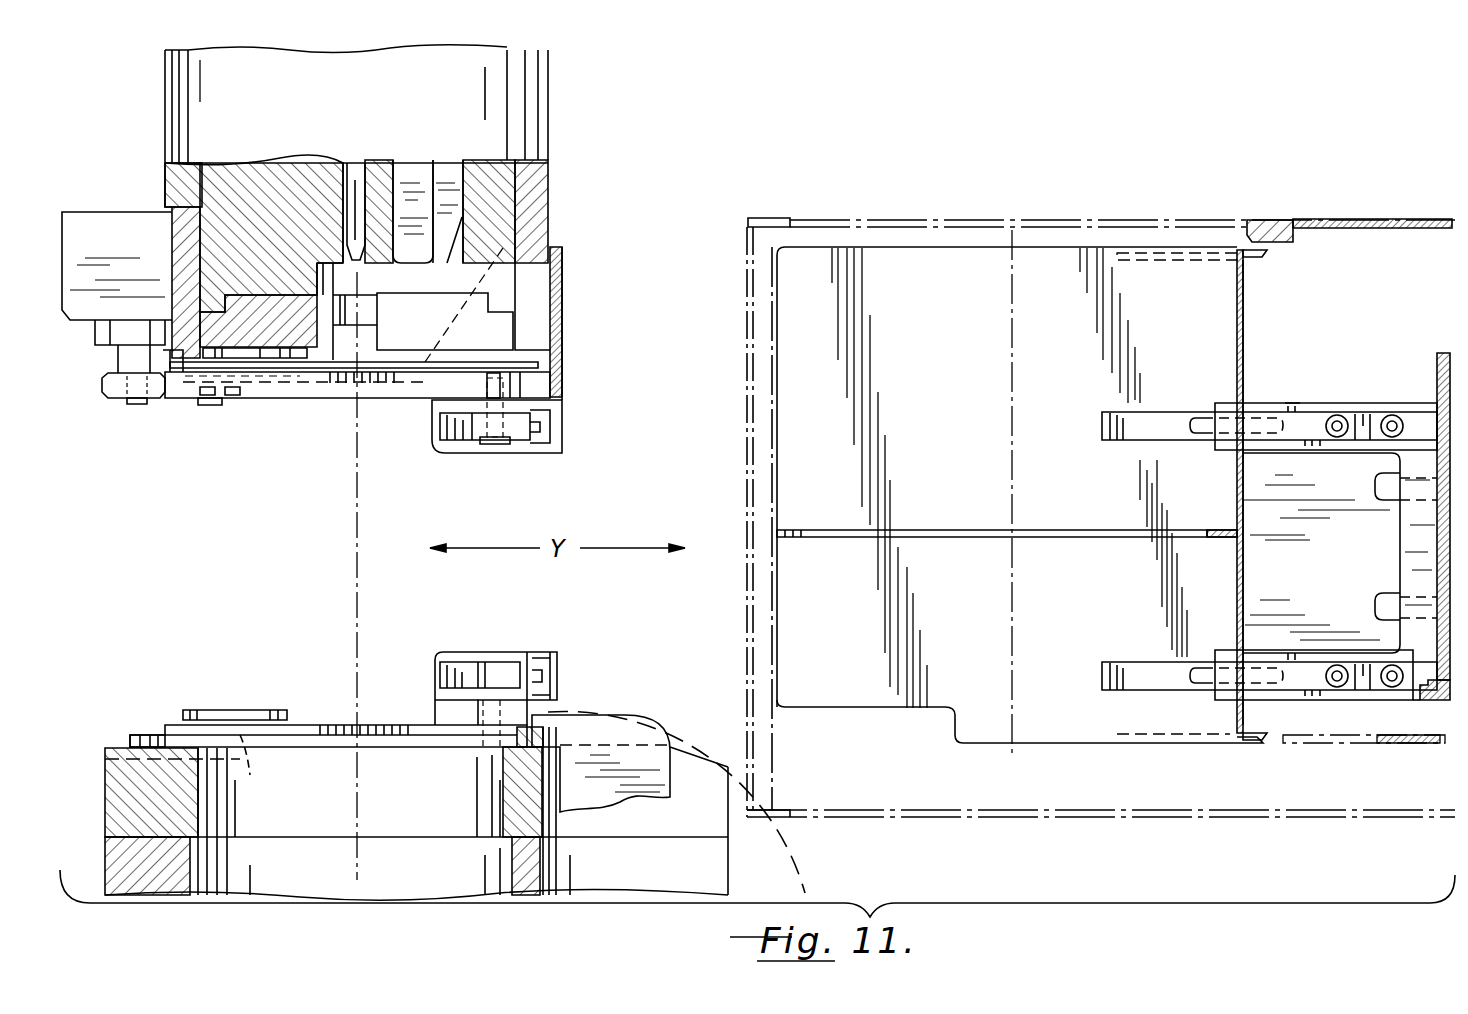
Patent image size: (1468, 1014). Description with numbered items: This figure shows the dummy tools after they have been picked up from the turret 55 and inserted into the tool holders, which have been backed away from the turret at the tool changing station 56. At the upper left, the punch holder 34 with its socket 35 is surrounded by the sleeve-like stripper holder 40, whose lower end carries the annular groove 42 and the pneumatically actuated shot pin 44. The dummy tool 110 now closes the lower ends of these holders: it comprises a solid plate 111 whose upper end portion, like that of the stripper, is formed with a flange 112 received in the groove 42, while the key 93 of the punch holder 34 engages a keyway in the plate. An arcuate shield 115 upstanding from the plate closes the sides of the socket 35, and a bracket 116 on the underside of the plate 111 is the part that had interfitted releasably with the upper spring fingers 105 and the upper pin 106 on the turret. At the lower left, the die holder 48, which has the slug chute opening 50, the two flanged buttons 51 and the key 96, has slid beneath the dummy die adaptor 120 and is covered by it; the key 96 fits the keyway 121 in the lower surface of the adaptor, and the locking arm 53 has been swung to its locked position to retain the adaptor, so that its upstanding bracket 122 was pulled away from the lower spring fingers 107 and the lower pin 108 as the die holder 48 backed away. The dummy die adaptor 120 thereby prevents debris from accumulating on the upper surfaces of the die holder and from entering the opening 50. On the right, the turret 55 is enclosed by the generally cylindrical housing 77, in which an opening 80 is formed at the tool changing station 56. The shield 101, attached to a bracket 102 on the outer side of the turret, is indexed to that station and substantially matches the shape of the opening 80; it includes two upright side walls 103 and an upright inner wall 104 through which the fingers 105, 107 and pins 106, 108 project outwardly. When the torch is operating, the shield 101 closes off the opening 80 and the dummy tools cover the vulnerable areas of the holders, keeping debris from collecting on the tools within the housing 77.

The punch holder 34 is at (210, 194).
The socket 35 is at (554, 272).
The stripper holder 40 is at (550, 190).
The annular groove 42 is at (188, 352).
The shot pin 44 is at (123, 362).
The die holder 48 is at (104, 773).
The opening 50 is at (200, 807).
The flanged buttons 51 is at (239, 710).
The locking arm 53 is at (612, 723).
The turret 55 is at (1436, 383).
The tool changing station 56 is at (768, 492).
The housing 77 is at (1352, 223).
The opening 80 is at (1230, 220).
The key 93 is at (268, 332).
The key 96 is at (148, 743).
The shield 101 is at (1237, 310).
The bracket 102 is at (1400, 548).
The side walls 103 is at (1246, 350).
The inner wall 104 is at (885, 705).
The upper spring fingers 105 is at (1120, 442).
The upper pin 106 is at (1202, 418).
The lower spring fingers 107 is at (1120, 693).
The lower pin 108 is at (1201, 668).
The dummy tool 110 is at (265, 399).
The plate 111 is at (343, 384).
The flange 112 is at (337, 360).
The arcuate shield 115 is at (563, 328).
The bracket 116 is at (450, 454).
The dummy die adaptor 120 is at (405, 726).
The keyway 121 is at (199, 764).
The bracket 122 is at (468, 652).